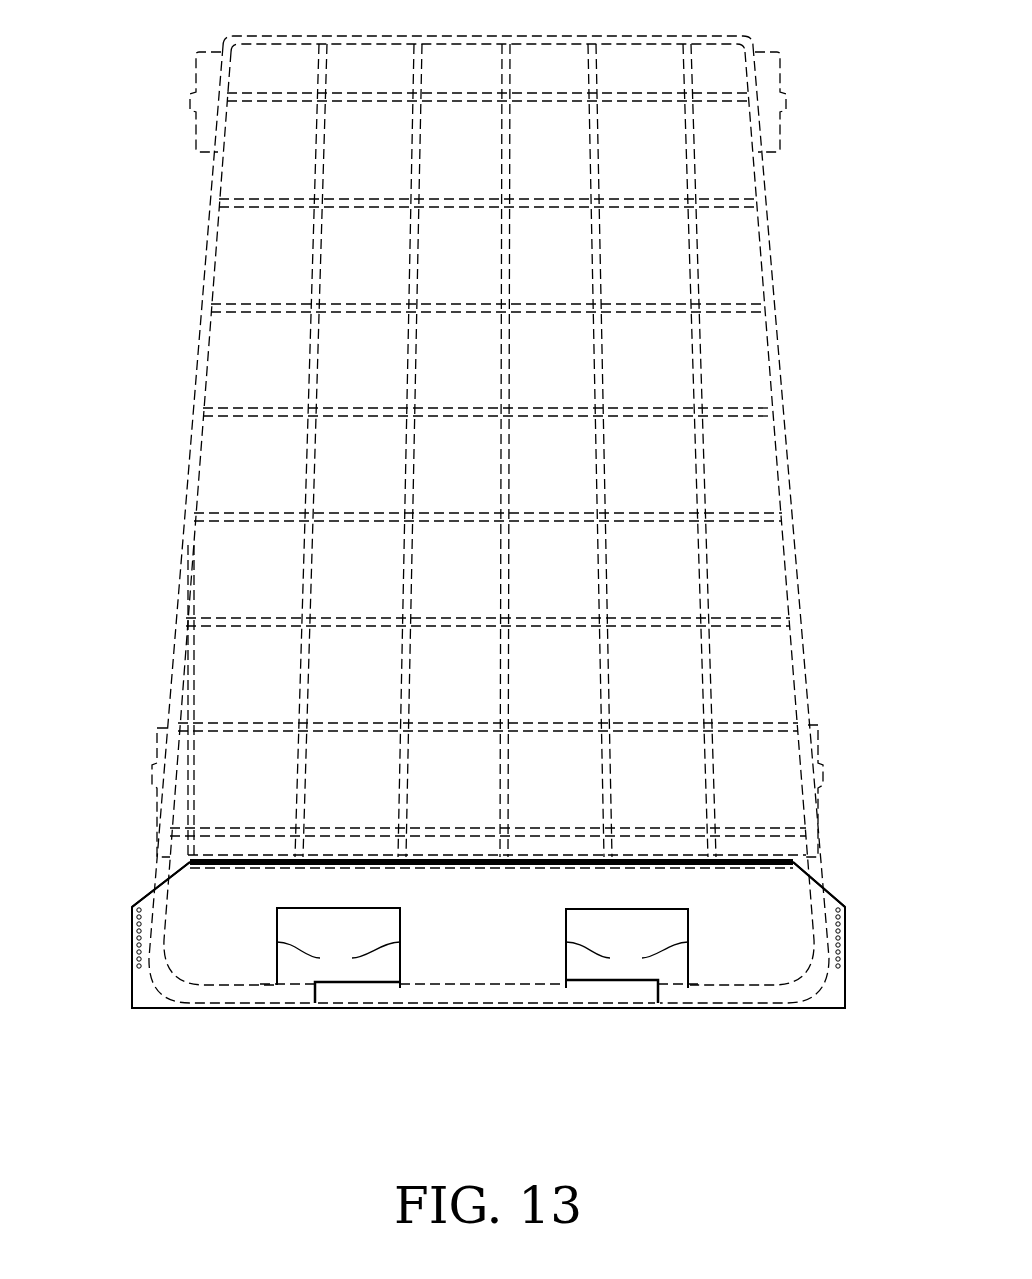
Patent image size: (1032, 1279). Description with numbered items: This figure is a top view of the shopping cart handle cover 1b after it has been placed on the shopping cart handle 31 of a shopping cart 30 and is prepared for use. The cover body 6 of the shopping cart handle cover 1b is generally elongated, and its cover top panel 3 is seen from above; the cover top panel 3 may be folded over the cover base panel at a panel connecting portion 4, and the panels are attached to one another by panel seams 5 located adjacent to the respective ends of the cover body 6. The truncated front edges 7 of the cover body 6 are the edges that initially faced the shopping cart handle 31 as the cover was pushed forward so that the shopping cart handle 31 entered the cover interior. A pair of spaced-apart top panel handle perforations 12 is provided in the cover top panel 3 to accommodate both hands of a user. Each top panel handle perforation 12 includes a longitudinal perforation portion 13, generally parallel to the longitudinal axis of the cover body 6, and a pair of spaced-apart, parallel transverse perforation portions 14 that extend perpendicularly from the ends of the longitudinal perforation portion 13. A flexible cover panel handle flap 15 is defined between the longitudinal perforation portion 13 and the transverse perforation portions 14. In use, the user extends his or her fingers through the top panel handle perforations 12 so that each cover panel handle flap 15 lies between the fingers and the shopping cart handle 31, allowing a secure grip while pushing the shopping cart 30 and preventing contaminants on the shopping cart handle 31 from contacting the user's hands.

The shopping cart 30 is at (140, 499).
The cover body 6 is at (238, 850).
The cover top panel 3 is at (527, 880).
The shopping cart handle cover 1b is at (148, 1023).
The truncated front edges 7 is at (136, 905).
The panel seam 5 is at (136, 912).
The longitudinal perforation portion 13 is at (340, 908).
The top panel handle perforation 12 is at (388, 898).
The transverse perforation portions 14 is at (482, 957).
The cover panel handle flap 15 is at (390, 984).
The shopping cart handle 31 is at (236, 996).
The panel connecting portion 4 is at (660, 1012).